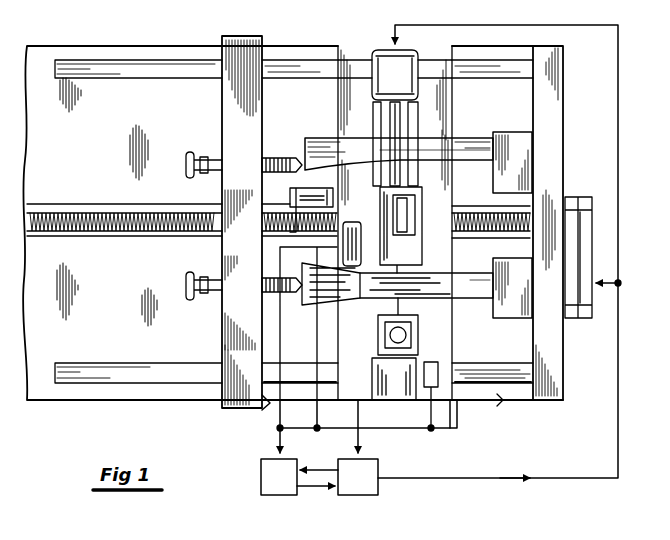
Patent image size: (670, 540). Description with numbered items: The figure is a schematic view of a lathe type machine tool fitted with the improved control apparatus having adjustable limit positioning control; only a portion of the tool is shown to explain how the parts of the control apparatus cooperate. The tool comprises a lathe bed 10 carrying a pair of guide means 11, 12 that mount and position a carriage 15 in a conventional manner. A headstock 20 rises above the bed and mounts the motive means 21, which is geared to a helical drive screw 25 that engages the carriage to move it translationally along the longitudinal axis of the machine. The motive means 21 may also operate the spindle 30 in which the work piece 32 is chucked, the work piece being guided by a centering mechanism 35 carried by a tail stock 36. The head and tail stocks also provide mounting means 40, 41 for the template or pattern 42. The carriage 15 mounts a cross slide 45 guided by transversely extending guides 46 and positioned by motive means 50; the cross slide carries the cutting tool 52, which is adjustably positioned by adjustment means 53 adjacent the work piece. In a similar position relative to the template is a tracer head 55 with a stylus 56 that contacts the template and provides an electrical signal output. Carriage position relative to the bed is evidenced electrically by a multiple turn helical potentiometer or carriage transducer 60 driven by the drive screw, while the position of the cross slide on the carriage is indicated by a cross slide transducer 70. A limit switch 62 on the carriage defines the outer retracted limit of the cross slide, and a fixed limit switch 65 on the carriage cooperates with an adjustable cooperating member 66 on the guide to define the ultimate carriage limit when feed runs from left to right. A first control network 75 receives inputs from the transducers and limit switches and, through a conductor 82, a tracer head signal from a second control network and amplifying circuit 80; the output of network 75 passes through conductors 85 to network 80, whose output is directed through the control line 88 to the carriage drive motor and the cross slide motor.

The lathe bed 10 is at (177, 400).
The guide means 11 is at (66, 390).
The guide means 12 is at (92, 60).
The carriage 15 is at (453, 98).
The headstock 20 is at (563, 357).
The motive means 21 is at (594, 197).
The helical drive screw 25 is at (88, 204).
The spindle 30 is at (510, 318).
The work piece 32 is at (305, 305).
The centering mechanism 35 is at (184, 280).
The tail stock 36 is at (222, 345).
The mounting means 40 is at (520, 122).
The mounting means 41 is at (212, 152).
The template 42 is at (318, 133).
The cross slide 45 is at (425, 268).
The transversely extending guides 46 is at (410, 398).
The motive means 50 is at (382, 48).
The cutting tool 52 is at (414, 300).
The adjustment means 53 is at (406, 335).
The tracer head 55 is at (420, 208).
The stylus 56 is at (398, 160).
The carriage transducer 60 is at (306, 178).
The limit switch 62 is at (438, 370).
The fixed limit switch 65 is at (458, 404).
The adjustable cooperating member 66 is at (264, 406).
The cross slide transducer 70 is at (351, 229).
The first control network 75 is at (279, 477).
The second control network and amplifying circuit 80 is at (358, 477).
The conductor 82 is at (322, 468).
The conductor 85 is at (312, 492).
The control line 88 is at (446, 478).